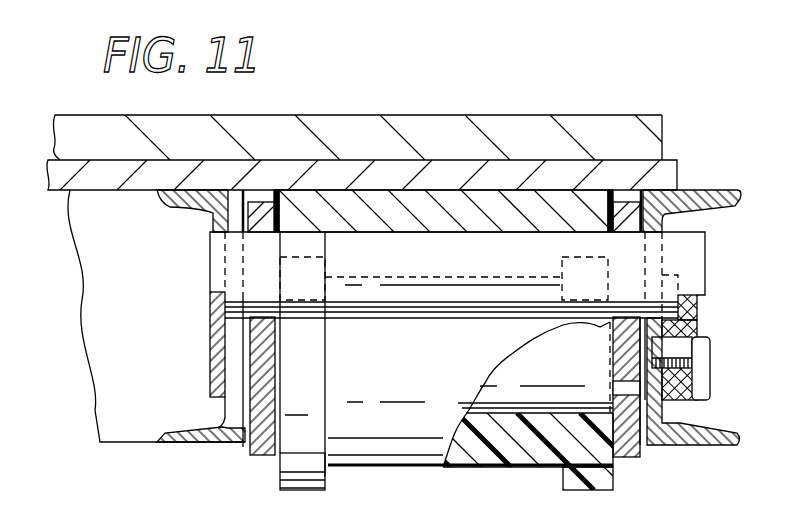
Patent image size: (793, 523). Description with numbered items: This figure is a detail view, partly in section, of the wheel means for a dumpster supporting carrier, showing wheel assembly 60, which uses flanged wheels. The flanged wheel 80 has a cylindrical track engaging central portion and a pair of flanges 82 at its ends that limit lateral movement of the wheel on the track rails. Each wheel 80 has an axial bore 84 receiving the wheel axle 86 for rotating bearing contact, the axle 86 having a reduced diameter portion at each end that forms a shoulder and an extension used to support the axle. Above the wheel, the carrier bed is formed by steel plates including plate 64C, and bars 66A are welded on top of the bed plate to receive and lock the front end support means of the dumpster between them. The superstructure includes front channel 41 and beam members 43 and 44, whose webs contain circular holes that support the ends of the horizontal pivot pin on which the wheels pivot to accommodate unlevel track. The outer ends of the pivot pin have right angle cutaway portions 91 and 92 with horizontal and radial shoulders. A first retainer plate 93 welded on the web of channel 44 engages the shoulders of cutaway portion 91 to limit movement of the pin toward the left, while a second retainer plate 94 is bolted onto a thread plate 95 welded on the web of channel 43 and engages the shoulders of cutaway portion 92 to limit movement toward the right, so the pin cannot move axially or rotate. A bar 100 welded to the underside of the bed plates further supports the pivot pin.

The bars 66A is at (500, 116).
The plate 64C is at (679, 162).
The beam member 43 is at (707, 193).
The beam member 44 is at (185, 200).
The front channel 41 is at (130, 348).
The bar 100 is at (413, 215).
The cutaway portion 91 is at (210, 302).
The first retainer plate 93 is at (212, 365).
The cutaway portion 92 is at (697, 306).
The second retainer plate 94 is at (680, 321).
The thread plate 95 is at (662, 400).
The wheel axle 86 is at (583, 377).
The axial bore 84 is at (491, 410).
The wheel assembly 60 is at (476, 471).
The flanged wheel 80 is at (360, 458).
The flange 82 is at (290, 470).